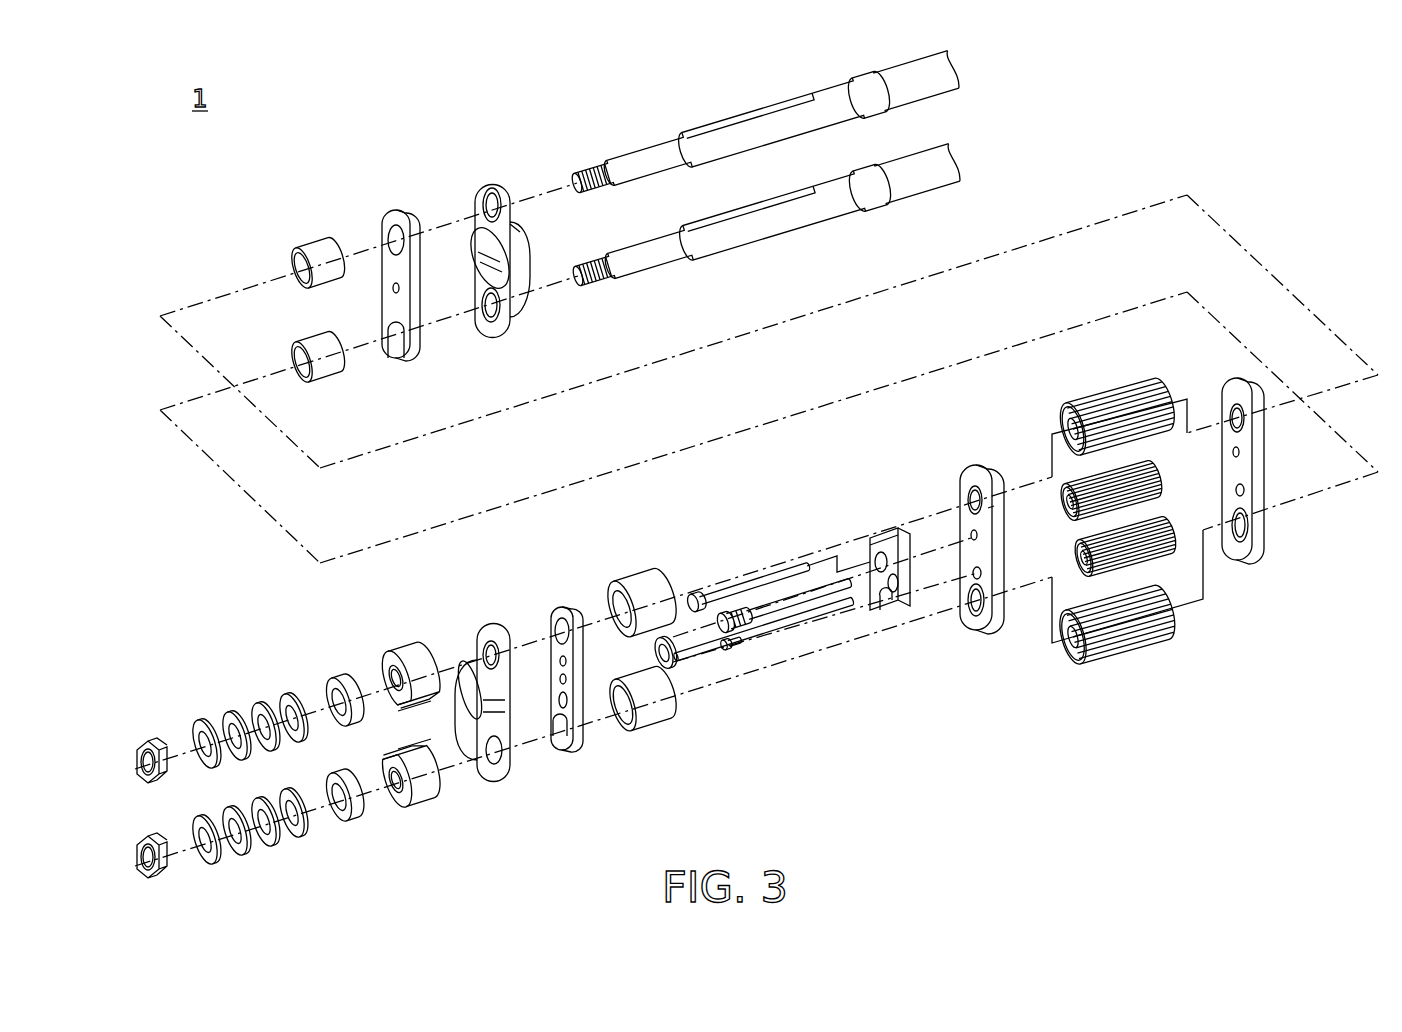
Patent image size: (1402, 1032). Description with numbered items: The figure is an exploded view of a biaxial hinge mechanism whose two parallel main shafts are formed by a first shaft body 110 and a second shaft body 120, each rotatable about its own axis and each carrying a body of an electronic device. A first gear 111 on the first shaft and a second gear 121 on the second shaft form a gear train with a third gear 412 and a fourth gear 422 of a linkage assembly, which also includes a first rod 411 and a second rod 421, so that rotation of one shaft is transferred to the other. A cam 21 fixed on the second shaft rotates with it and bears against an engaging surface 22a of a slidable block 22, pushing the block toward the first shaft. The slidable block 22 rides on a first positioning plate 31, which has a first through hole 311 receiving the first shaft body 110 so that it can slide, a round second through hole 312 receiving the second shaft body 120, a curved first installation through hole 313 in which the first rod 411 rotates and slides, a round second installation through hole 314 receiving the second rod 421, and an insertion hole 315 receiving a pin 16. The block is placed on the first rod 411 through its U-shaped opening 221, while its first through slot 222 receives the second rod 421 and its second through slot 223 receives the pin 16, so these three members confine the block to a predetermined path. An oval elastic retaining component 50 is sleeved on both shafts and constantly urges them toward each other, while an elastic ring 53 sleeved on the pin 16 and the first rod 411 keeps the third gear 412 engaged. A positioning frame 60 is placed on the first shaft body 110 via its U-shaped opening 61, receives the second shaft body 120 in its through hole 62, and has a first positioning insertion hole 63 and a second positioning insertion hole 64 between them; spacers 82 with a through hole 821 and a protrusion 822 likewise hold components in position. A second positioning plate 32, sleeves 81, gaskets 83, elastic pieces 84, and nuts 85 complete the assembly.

The first shaft body 110 is at (752, 232).
The second shaft body 120 is at (732, 127).
The first gear 111 is at (1130, 655).
The second gear 121 is at (1102, 388).
The pin 16 is at (735, 612).
The cam 21 is at (636, 575).
The slidable block 22 is at (866, 614).
The engaging surface 22a is at (850, 519).
The U-shaped opening 221 is at (890, 644).
The first through slot 222 is at (842, 545).
The second through slot 223 is at (893, 535).
The first positioning plate 31 is at (982, 506).
The first through hole 311 is at (980, 617).
The second through hole 312 is at (957, 460).
The first installation through hole 313 is at (943, 617).
The second installation through hole 314 is at (937, 493).
The insertion hole 315 is at (1011, 472).
The second positioning plate 32 is at (1268, 518).
The first rod 411 is at (770, 636).
The third gear 412 is at (1165, 550).
The second rod 421 is at (757, 582).
The fourth gear 422 is at (1155, 494).
The elastic retaining component 50 is at (489, 186).
The elastic ring 53 is at (680, 667).
The positioning frame 60 is at (491, 436).
The U-shaped opening 61 is at (579, 767).
The through hole 62 is at (542, 598).
The first positioning insertion hole 63 is at (542, 737).
The second positioning insertion hole 64 is at (531, 626).
The sleeve 81 is at (309, 250).
The spacer 82 is at (411, 726).
The through hole 821 is at (367, 740).
The protrusion 822 is at (425, 697).
The gasket 83 is at (337, 678).
The elastic piece 84 is at (298, 676).
The nut 85 is at (150, 740).